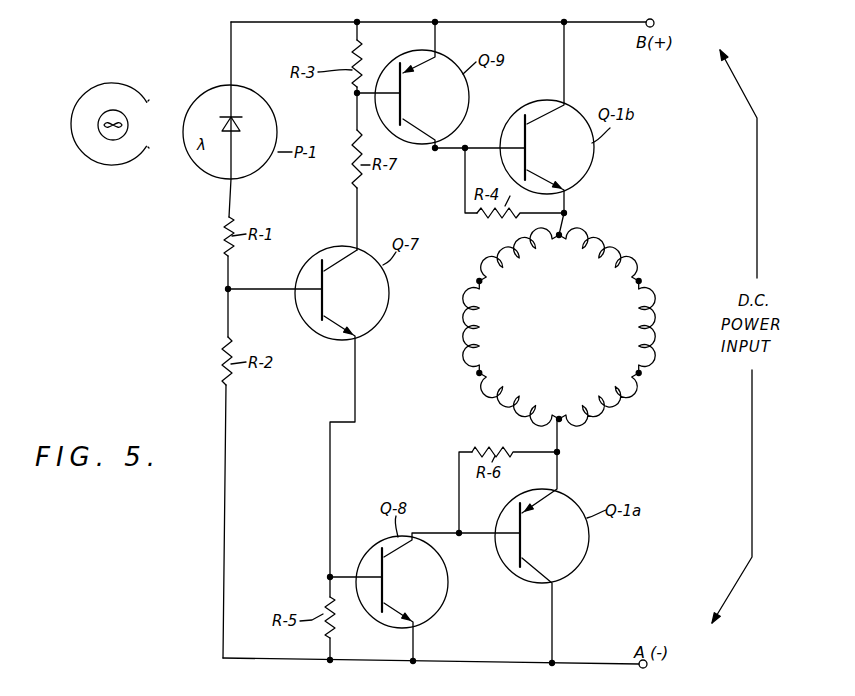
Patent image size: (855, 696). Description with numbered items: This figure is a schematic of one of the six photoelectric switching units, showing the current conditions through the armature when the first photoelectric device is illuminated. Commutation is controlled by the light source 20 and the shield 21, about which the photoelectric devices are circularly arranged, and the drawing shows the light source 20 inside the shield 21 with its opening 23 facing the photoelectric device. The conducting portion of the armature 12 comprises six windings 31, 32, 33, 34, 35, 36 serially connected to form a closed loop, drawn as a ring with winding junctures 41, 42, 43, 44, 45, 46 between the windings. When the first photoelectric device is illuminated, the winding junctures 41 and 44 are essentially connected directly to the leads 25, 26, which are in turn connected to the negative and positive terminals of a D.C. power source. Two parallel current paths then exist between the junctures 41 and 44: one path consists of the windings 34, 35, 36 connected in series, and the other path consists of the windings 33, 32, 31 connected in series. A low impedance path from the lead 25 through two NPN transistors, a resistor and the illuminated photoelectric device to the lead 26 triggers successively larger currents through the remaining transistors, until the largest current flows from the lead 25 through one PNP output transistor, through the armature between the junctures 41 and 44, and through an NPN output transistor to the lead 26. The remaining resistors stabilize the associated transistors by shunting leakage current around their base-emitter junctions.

The armature 12 is at (554, 329).
The light source 20 is at (100, 112).
The shield 21 is at (113, 80).
The light aperture 23 is at (145, 121).
The lead 25 is at (597, 649).
The lead 26 is at (618, 23).
The winding 31 is at (600, 403).
The winding 32 is at (645, 330).
The winding 33 is at (594, 252).
The winding 34 is at (511, 258).
The winding 35 is at (472, 331).
The winding 36 is at (510, 401).
The winding juncture 41 is at (561, 420).
The winding juncture 42 is at (641, 374).
The winding juncture 43 is at (641, 282).
The winding juncture 44 is at (562, 236).
The winding juncture 45 is at (477, 282).
The winding juncture 46 is at (477, 375).